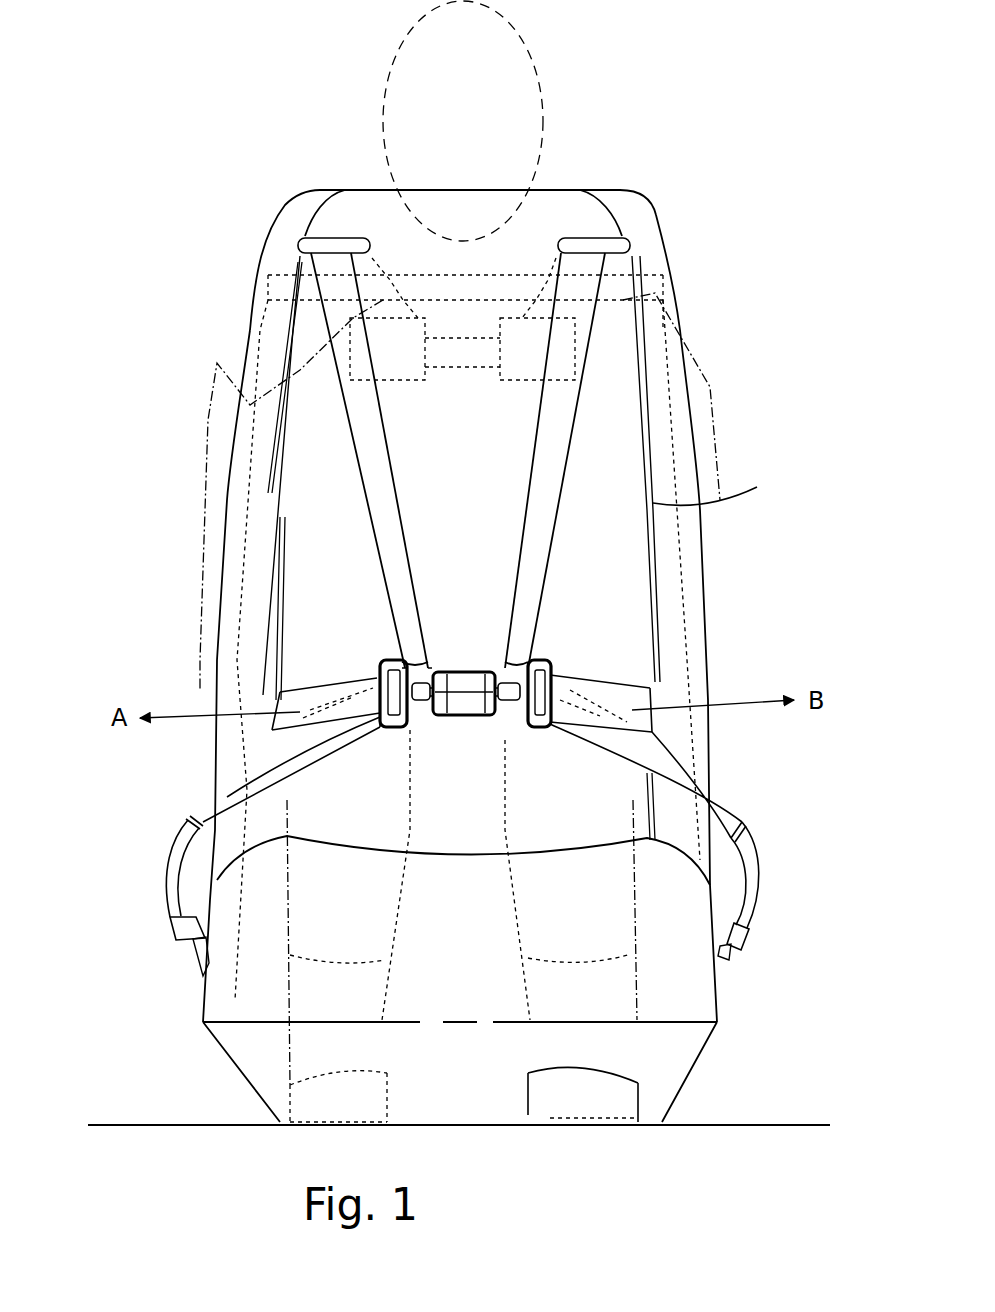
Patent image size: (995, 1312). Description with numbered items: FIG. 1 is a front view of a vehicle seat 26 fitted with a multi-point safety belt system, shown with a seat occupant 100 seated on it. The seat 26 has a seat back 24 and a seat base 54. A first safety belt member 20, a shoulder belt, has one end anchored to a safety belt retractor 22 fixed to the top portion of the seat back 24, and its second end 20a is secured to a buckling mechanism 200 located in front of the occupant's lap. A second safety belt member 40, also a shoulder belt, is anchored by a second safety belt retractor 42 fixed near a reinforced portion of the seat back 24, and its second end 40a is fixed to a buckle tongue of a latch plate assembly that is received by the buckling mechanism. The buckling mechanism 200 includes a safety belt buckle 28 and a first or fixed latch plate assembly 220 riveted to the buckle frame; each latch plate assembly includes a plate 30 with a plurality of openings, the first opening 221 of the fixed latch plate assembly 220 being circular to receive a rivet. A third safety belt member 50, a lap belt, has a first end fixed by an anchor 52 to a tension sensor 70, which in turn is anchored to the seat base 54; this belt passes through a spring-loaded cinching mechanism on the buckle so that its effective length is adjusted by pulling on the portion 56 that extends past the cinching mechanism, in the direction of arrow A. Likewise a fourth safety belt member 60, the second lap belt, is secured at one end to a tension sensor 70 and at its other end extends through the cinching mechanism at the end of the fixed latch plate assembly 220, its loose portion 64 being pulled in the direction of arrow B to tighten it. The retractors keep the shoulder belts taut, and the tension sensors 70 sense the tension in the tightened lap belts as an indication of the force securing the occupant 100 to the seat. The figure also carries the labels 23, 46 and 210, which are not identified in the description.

The seat occupant 100 is at (413, 82).
The first safety belt member 20 is at (357, 443).
The second end of the first safety belt member 20a is at (386, 655).
The safety belt retractor 22 is at (262, 404).
The first tongue 23 is at (426, 660).
The seat back 24 is at (283, 232).
The seat 26 is at (705, 548).
The safety belt buckle 28 is at (471, 672).
The plate 30 is at (410, 720).
The second safety belt member 40 is at (555, 430).
The second end of the second safety belt member 40a is at (503, 663).
The second safety belt retractor 42 is at (645, 302).
The second tongue 46 is at (523, 675).
The third safety belt member 50 is at (250, 777).
The anchor 52 is at (187, 955).
The seat base 54 is at (200, 1032).
The portion of the third safety belt member 56 is at (330, 682).
The fourth safety belt member 60 is at (760, 850).
The portion of the fourth safety belt member 64 is at (643, 683).
The tension sensor 70 is at (193, 942).
The buckling mechanism 200 is at (450, 718).
The first latch plate 210 is at (380, 658).
The first or fixed latch plate assembly 220 is at (555, 658).
The first opening 221 is at (388, 722).